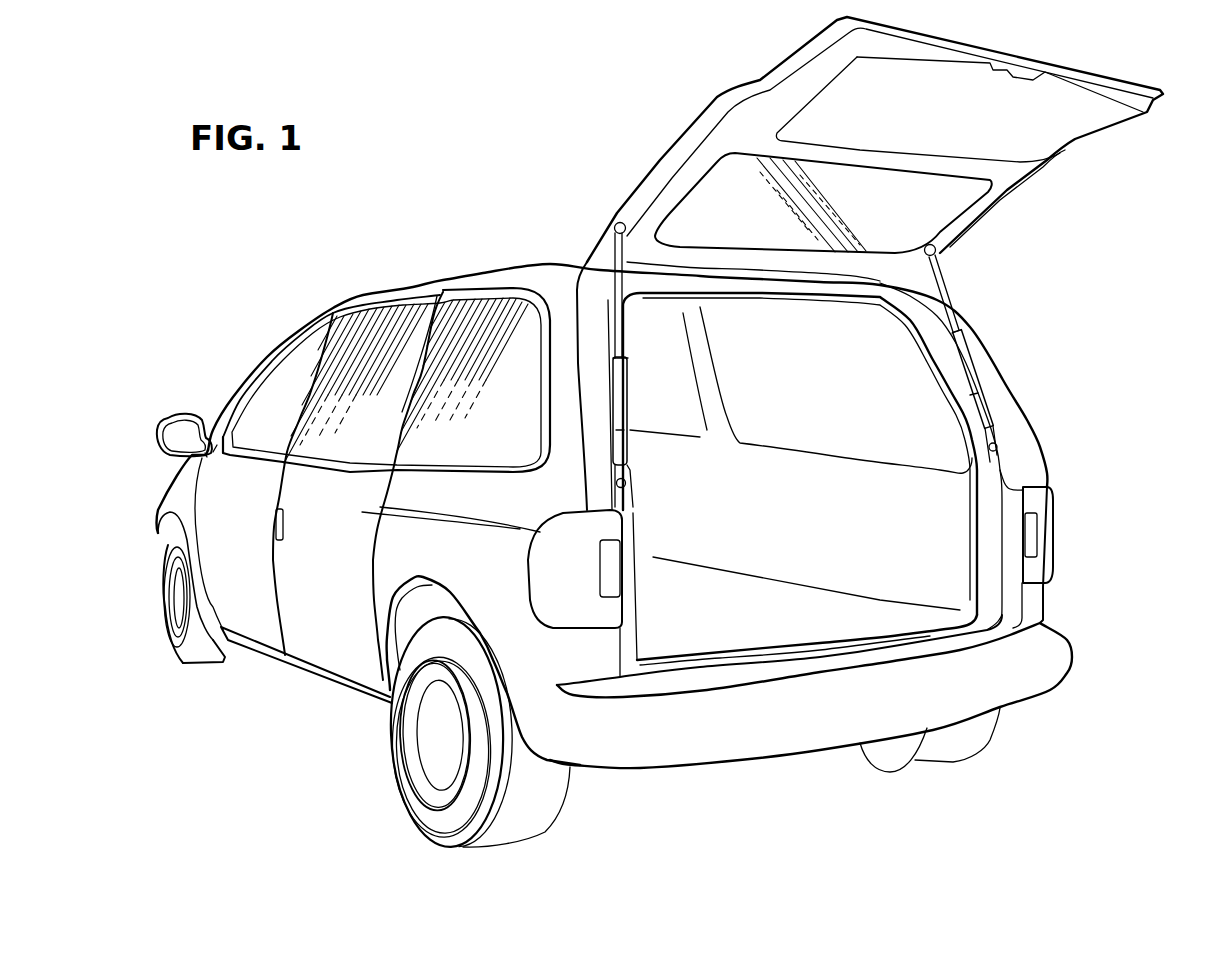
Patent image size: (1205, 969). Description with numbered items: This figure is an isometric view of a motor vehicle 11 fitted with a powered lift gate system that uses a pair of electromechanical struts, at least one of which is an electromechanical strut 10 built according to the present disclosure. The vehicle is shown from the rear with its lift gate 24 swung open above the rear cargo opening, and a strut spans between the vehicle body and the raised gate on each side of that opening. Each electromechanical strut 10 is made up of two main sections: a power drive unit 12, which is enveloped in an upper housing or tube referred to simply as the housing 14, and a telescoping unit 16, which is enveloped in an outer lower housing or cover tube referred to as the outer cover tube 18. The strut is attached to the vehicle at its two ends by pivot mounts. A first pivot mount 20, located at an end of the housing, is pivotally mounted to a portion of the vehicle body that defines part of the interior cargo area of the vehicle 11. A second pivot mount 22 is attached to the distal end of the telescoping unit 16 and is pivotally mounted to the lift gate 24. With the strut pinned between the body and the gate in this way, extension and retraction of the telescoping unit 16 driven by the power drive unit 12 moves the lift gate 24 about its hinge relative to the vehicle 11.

The electromechanical strut 10 is at (600, 288).
The motor vehicle 11 is at (395, 249).
The power drive unit 12 is at (968, 354).
The housing 14 is at (983, 408).
The telescoping unit 16 is at (953, 299).
The outer cover tube 18 is at (957, 318).
The first pivot mount 20 is at (1005, 458).
The second pivot mount 22 is at (942, 252).
The lift gate 24 is at (1063, 130).